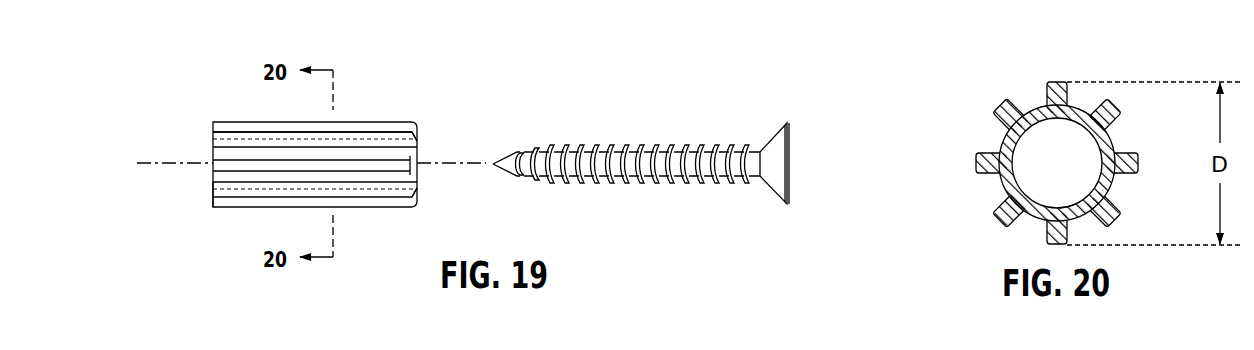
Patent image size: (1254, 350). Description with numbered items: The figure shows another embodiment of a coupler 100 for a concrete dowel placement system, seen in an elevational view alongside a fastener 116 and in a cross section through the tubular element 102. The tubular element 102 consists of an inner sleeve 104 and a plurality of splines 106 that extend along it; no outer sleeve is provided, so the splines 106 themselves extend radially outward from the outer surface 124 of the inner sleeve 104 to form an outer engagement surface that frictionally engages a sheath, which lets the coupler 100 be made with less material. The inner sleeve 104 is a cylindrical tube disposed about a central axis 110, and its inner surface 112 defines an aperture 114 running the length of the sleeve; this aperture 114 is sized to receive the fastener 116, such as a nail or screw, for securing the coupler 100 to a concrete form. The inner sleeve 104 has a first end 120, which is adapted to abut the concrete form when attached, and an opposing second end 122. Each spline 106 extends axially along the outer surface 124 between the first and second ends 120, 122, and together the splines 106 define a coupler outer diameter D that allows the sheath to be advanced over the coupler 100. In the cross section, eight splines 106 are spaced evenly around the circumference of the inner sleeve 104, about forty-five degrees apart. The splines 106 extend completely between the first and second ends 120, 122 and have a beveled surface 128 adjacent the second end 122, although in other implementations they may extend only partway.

In FIG. 19, the coupler 100 is at (239, 90).
In FIG. 19, the tubular element 102 is at (224, 117).
In FIG. 20, the tubular element 102 is at (1055, 143).
In FIG. 20, the inner sleeve 104 is at (990, 190).
In FIG. 19, the splines 106 is at (379, 127).
In FIG. 20, the splines 106 is at (1000, 111).
In FIG. 19, the central axis 110 is at (160, 164).
In FIG. 20, the inner surface 112 is at (1055, 210).
In FIG. 20, the aperture 114 is at (1045, 154).
In FIG. 19, the fastener 116 is at (643, 124).
In FIG. 19, the first end 120 is at (214, 197).
In FIG. 19, the second end 122 is at (416, 140).
In FIG. 20, the outer surface 124 is at (1116, 135).
In FIG. 19, the beveled surface 128 is at (417, 192).